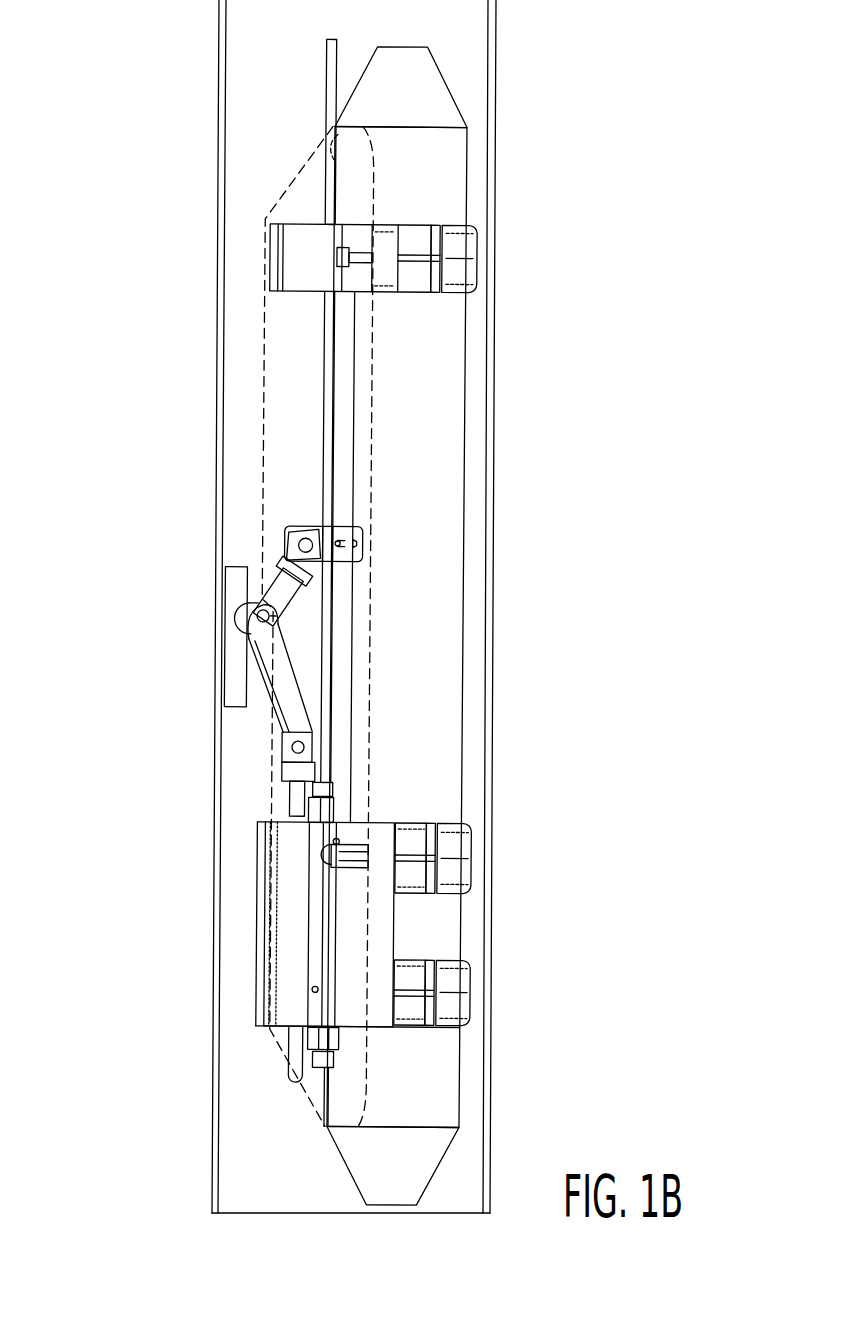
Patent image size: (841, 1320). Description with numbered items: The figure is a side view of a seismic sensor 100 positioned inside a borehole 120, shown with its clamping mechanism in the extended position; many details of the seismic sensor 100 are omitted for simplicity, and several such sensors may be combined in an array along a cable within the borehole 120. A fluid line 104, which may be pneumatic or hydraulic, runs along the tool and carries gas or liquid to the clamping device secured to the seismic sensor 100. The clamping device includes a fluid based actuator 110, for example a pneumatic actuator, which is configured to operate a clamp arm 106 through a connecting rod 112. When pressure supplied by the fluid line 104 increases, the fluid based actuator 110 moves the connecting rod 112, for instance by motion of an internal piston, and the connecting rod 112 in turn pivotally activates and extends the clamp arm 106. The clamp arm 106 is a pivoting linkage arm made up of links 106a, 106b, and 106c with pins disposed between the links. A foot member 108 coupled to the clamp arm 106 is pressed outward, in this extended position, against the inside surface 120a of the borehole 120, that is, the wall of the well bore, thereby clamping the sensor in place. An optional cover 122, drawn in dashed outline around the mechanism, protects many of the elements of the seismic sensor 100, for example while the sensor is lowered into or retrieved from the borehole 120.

The seismic sensor 100 is at (470, 147).
The fluid line 104 is at (327, 74).
The clamp arm 106 is at (263, 715).
The link 106a is at (278, 577).
The link 106b is at (258, 620).
The link 106c is at (290, 532).
The foot member 108 is at (232, 668).
The fluid based actuator 110 is at (290, 930).
The connecting rod 112 is at (300, 805).
The borehole 120 is at (495, 387).
The inside surface of borehole 120a is at (220, 1192).
The cover 122 is at (262, 360).